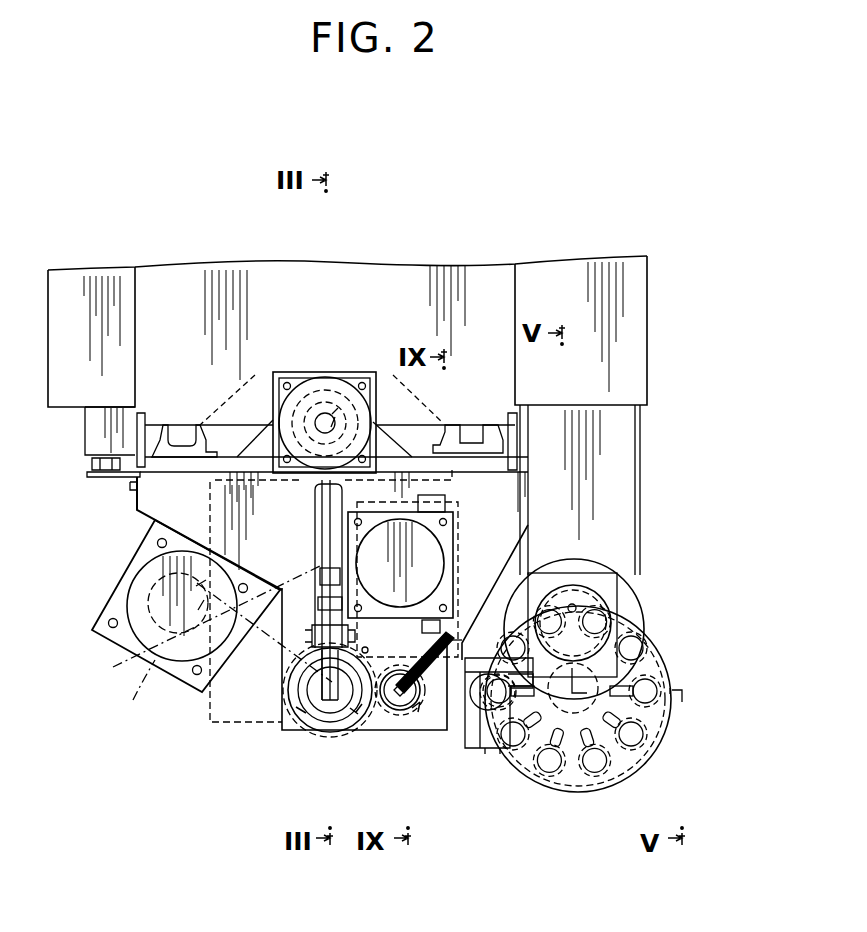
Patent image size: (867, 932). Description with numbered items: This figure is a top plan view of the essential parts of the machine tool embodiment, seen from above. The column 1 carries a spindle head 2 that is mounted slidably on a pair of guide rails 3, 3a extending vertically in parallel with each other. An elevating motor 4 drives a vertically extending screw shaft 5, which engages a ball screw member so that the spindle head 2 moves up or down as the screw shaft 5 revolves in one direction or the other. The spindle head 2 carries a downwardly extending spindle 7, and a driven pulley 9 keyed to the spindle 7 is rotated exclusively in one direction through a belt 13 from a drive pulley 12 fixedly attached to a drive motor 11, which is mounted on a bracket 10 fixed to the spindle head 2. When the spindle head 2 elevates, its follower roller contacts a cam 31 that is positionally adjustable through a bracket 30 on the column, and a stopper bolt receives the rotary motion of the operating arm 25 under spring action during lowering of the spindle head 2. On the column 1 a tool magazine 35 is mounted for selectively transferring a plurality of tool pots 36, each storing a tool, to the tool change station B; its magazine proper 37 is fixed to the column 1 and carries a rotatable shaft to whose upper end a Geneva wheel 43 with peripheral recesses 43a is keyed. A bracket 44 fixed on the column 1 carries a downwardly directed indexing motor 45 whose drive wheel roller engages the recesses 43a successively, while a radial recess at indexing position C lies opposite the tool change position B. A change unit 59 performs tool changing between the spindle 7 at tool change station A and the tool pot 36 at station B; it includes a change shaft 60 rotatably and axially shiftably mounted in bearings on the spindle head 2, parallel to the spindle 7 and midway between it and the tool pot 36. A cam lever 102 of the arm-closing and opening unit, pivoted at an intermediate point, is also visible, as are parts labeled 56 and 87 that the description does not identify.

The column 1 is at (640, 376).
The spindle head 2 is at (360, 730).
The guide rail 3 is at (183, 426).
The guide rail 3a is at (471, 432).
The elevating motor 4 is at (308, 390).
The screw shaft 5 is at (342, 405).
The spindle 7 is at (332, 720).
The driven pulley 9 is at (300, 708).
The bracket 10 is at (156, 665).
The drive motor 11 is at (138, 591).
The drive pulley 12 is at (122, 655).
The belt 13 is at (238, 674).
The operating arm 25 is at (298, 670).
The bracket 30 is at (322, 512).
The cam 31 is at (320, 577).
The tool magazine 35 is at (686, 594).
The tool pot 36 is at (545, 770).
The magazine proper 37 is at (572, 778).
The Geneva wheel 43 is at (612, 734).
The peripheral recess 43a is at (590, 770).
The bracket 44 is at (628, 460).
The indexing motor 45 is at (590, 626).
The clamp block 56 is at (474, 736).
The change unit 59 is at (414, 712).
The change shaft 60 is at (394, 712).
The drive housing 87 is at (432, 551).
The cam lever 102 is at (434, 648).
The tool change station A is at (364, 731).
The tool change station B is at (460, 700).
The indexing position C is at (494, 738).